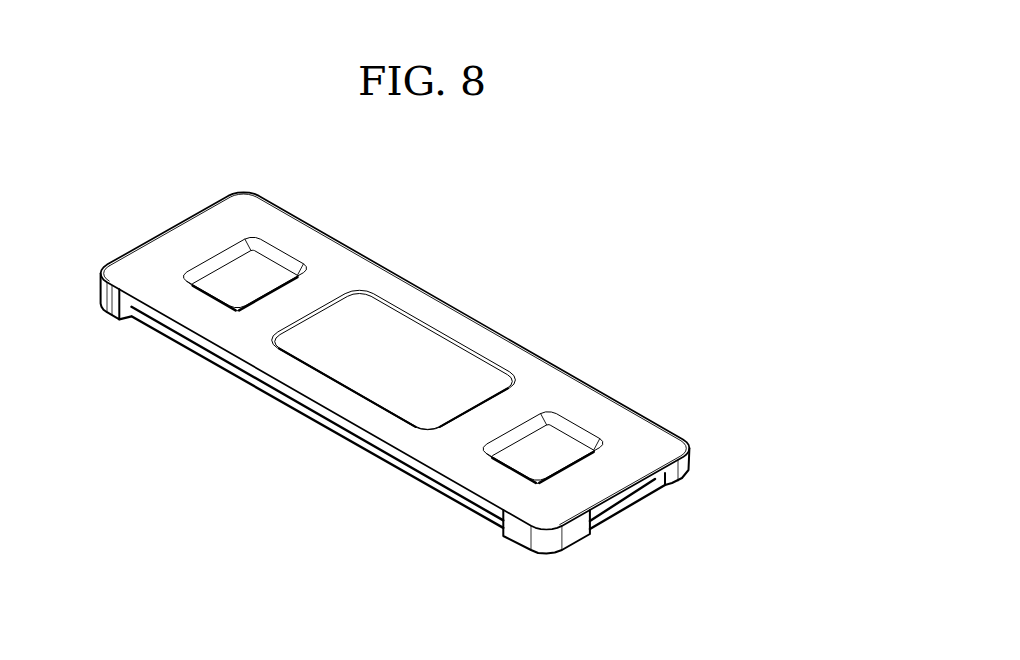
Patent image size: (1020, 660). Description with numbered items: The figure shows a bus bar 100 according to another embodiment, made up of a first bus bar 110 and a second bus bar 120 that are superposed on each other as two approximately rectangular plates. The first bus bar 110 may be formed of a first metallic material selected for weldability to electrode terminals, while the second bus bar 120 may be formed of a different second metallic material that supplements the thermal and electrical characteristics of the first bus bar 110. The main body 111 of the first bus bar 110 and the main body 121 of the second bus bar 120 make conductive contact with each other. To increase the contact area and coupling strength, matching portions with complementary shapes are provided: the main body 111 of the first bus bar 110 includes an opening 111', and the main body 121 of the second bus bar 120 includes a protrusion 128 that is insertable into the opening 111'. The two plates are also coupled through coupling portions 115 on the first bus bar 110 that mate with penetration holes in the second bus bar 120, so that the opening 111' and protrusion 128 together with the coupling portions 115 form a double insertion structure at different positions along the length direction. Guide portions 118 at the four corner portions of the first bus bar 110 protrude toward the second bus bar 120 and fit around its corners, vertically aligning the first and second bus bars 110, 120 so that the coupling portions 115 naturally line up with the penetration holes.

The bus bar 100 is at (782, 440).
The first bus bar 110 is at (690, 452).
The main body 111 is at (395, 359).
The opening 111' is at (542, 389).
The coupling portion 115 is at (257, 275).
The guide portion 118 is at (545, 557).
The second bus bar 120 is at (651, 495).
The main body 121 is at (420, 478).
The protrusion 128 is at (408, 353).